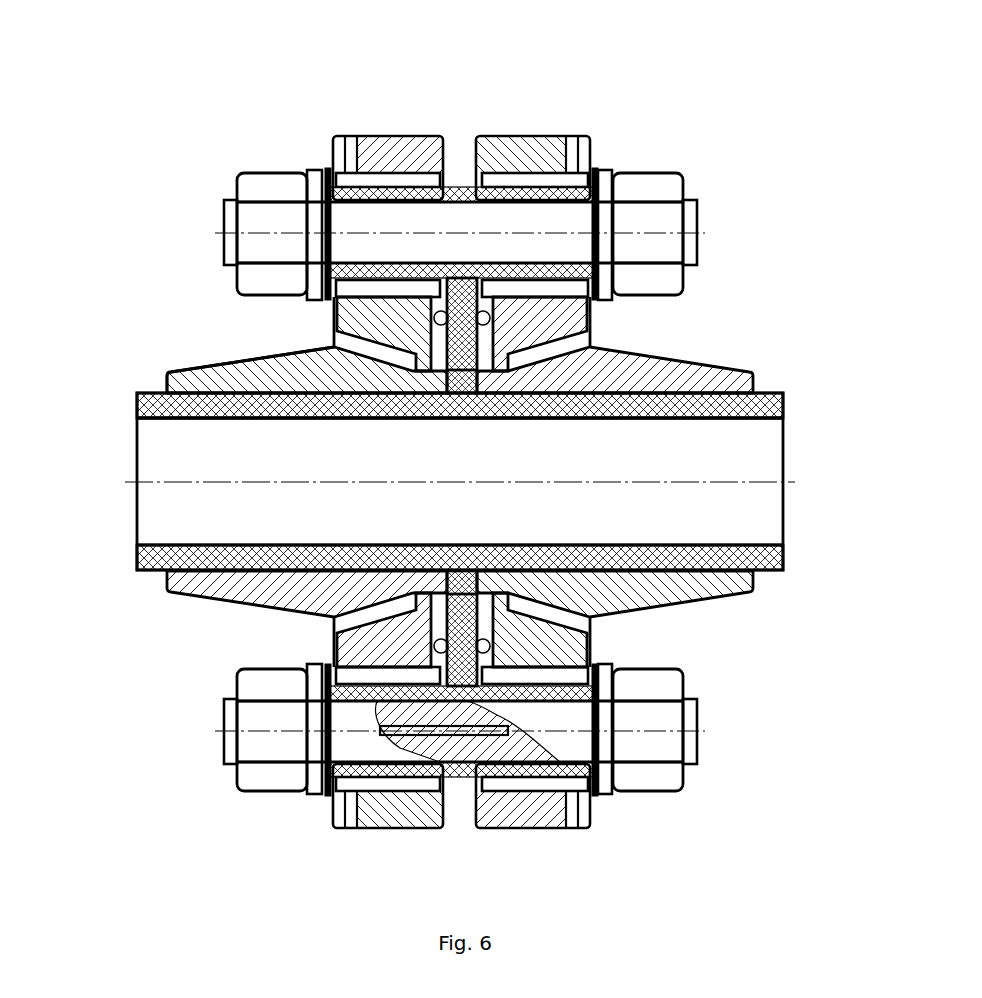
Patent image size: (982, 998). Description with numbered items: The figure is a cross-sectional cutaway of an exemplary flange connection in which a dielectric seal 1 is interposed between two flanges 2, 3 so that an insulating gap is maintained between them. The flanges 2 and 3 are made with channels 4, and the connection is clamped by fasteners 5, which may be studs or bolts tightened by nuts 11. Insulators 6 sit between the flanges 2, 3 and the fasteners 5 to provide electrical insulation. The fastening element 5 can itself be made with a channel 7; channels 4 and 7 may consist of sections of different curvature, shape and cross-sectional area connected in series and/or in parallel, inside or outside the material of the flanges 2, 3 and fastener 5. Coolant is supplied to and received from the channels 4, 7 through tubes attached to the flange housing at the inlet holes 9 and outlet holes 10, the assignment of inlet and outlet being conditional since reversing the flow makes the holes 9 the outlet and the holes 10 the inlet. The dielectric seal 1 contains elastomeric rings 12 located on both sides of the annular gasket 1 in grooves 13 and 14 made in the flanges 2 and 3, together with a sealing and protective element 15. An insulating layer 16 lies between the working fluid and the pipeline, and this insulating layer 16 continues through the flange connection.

The dielectric seal 1 is at (753, 374).
The flange 2 is at (630, 352).
The flange 3 is at (165, 383).
The channel 4 is at (332, 332).
The fastener 5 is at (452, 212).
The insulator 6 is at (362, 183).
The channel 7 is at (462, 745).
The inlet hole 9 is at (425, 350).
The outlet hole 10 is at (347, 140).
The nut 11 is at (268, 185).
The elastomeric ring 12 is at (735, 420).
The groove 13 is at (783, 417).
The groove 14 is at (250, 546).
The sealing and protective element 15 is at (567, 422).
The insulating layer 16 is at (783, 557).